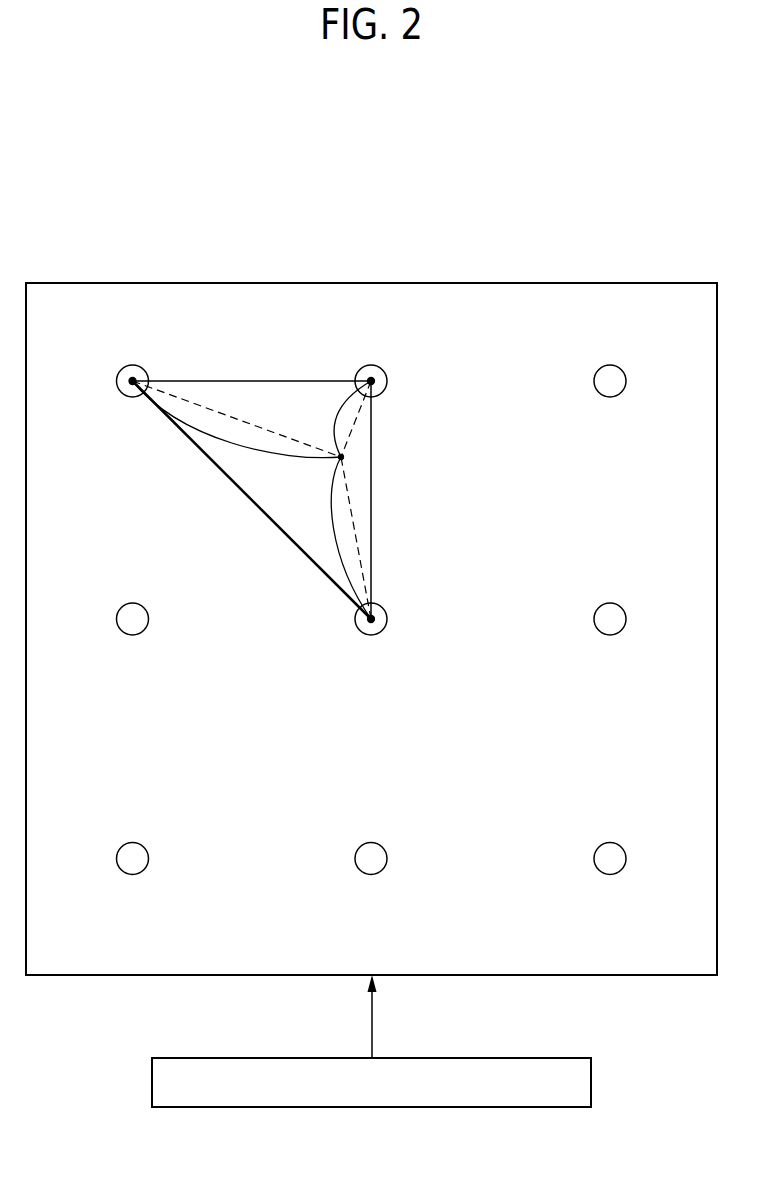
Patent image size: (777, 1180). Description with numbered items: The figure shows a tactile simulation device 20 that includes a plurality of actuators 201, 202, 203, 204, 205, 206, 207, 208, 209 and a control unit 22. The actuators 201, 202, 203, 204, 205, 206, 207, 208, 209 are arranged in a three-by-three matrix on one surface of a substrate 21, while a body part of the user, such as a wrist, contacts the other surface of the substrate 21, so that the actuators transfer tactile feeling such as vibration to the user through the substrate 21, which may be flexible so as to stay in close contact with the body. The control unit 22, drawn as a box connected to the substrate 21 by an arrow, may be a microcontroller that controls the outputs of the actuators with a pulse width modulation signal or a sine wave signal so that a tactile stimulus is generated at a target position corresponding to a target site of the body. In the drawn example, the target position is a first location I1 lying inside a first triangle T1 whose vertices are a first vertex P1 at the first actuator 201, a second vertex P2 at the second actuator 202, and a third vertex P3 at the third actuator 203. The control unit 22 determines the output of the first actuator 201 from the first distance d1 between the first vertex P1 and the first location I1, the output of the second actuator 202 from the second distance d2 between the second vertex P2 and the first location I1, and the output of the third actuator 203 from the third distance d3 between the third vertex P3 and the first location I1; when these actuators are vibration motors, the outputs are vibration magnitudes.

The tactile simulation device 20 is at (388, 207).
The substrate 21 is at (565, 283).
The control unit 22 is at (591, 1084).
The first actuator 201 is at (137, 383).
The second actuator 202 is at (399, 649).
The third actuator 203 is at (405, 354).
The actuator 204 is at (610, 397).
The actuator 205 is at (132, 635).
The actuator 206 is at (610, 635).
The actuator 207 is at (132, 874).
The actuator 208 is at (371, 874).
The actuator 209 is at (610, 874).
The first vertex P1 is at (134, 377).
The second vertex P2 is at (387, 619).
The third vertex P3 is at (372, 378).
The first location I1 is at (338, 460).
The first triangle T1 is at (257, 508).
The first distance d1 is at (237, 430).
The second distance d2 is at (336, 538).
The third distance d3 is at (339, 419).